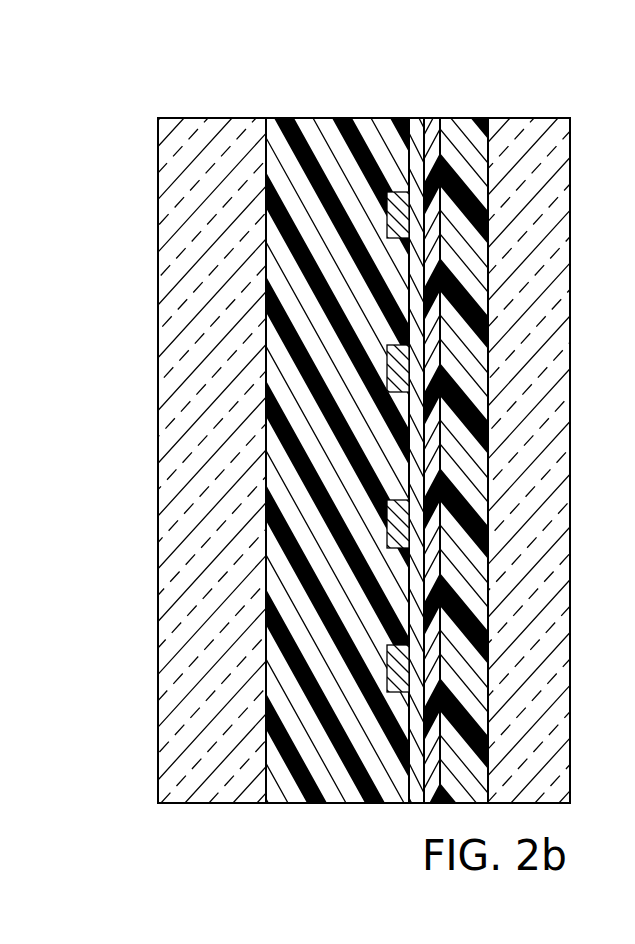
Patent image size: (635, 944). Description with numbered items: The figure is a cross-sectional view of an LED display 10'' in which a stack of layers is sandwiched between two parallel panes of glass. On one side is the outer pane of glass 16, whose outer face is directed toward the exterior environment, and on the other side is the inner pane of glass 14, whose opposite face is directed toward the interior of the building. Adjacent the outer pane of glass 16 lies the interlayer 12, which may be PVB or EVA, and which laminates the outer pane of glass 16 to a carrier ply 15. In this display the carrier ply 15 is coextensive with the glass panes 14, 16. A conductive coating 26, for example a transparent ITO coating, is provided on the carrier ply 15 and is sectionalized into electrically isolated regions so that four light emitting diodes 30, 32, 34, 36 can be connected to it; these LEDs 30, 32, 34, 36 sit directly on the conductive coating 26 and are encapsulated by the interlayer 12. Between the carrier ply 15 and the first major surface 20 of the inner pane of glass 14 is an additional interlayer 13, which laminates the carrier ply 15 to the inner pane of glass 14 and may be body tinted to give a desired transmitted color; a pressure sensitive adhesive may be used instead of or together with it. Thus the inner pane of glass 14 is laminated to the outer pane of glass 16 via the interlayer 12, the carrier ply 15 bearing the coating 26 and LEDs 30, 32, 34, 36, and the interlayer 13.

The LED display 10'' is at (291, 417).
The outer pane of glass 16 is at (228, 133).
The interlayer 12 is at (332, 135).
The conductive coating 26 is at (412, 190).
The carrier ply 15 is at (430, 210).
The additional interlayer 13 is at (470, 140).
The inner pane of glass 14 is at (530, 135).
The first major surface 20 is at (520, 466).
The light emitting diode 30 is at (404, 218).
The light emitting diode 32 is at (404, 374).
The light emitting diode 34 is at (404, 528).
The light emitting diode 36 is at (404, 670).